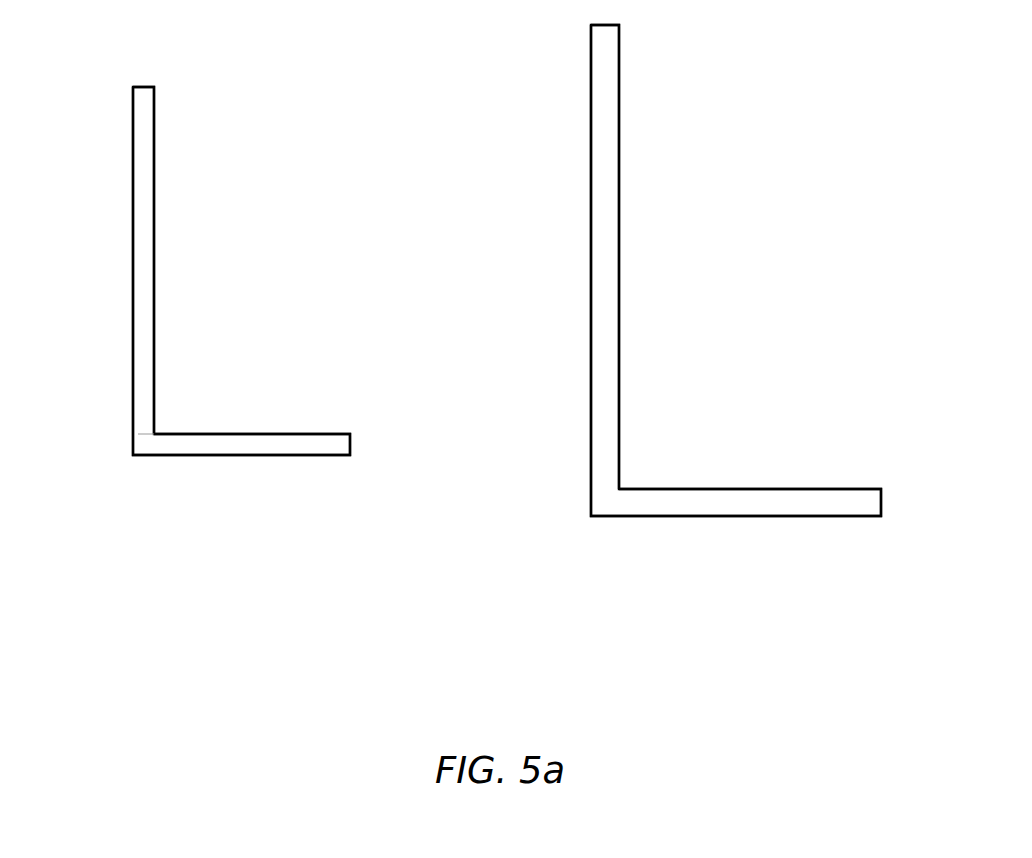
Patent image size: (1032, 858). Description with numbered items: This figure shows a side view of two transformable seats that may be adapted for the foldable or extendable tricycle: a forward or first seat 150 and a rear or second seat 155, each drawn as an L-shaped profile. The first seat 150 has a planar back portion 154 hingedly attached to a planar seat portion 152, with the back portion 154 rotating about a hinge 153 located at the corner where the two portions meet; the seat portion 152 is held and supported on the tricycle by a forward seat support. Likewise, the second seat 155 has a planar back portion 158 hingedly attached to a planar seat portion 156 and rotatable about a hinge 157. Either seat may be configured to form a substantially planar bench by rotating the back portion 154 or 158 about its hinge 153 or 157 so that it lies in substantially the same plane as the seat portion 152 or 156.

The first seat 150 is at (726, 162).
The seat portion 152 is at (790, 489).
The hinge 153 is at (591, 489).
The back portion 154 is at (591, 223).
The second seat 155 is at (278, 196).
The seat portion 156 is at (250, 457).
The hinge 157 is at (133, 434).
The back portion 158 is at (133, 128).